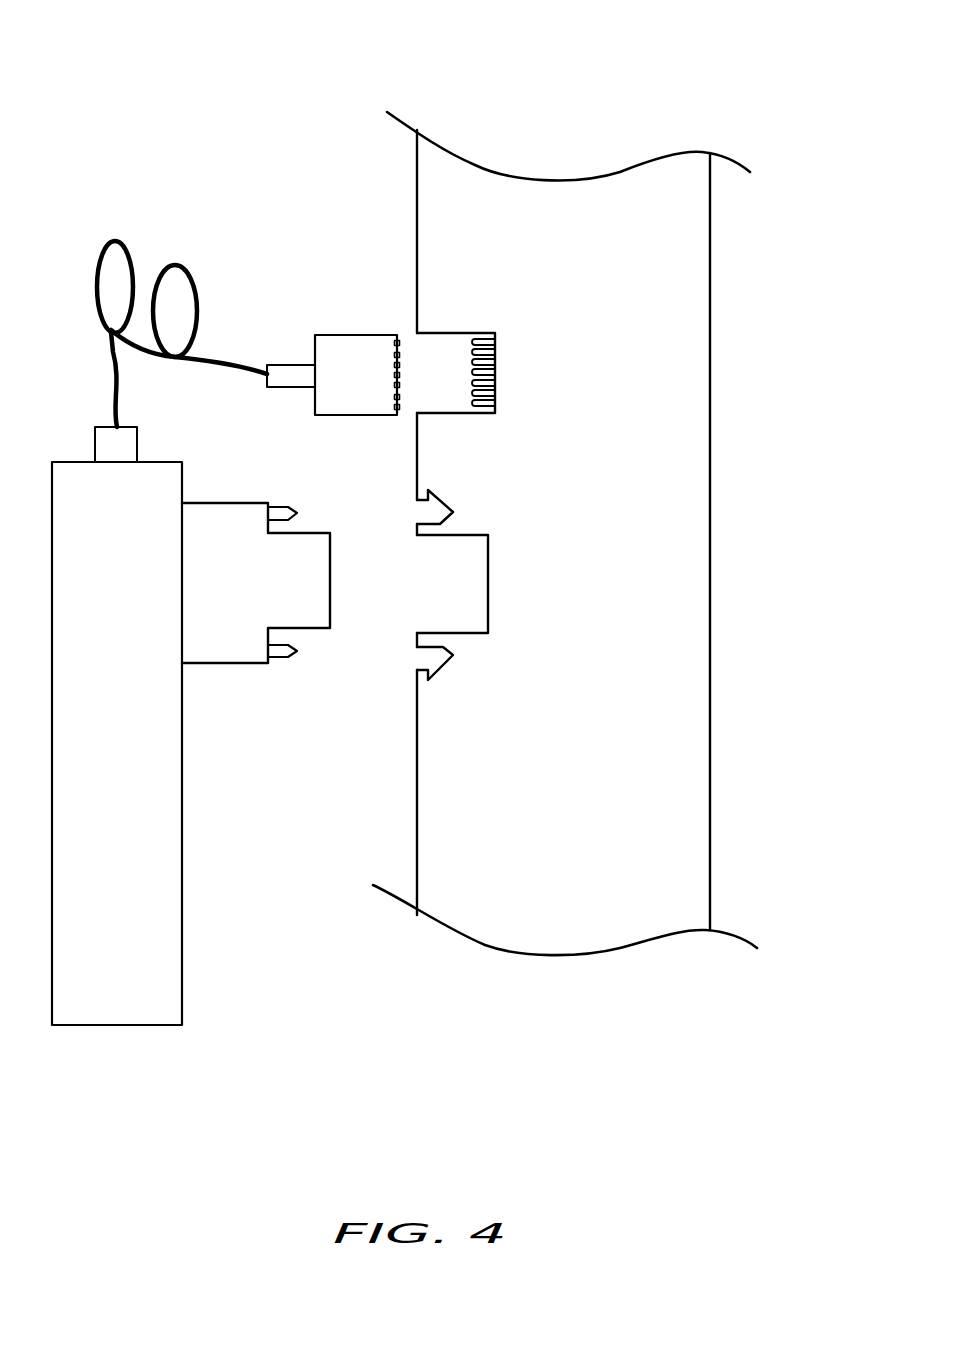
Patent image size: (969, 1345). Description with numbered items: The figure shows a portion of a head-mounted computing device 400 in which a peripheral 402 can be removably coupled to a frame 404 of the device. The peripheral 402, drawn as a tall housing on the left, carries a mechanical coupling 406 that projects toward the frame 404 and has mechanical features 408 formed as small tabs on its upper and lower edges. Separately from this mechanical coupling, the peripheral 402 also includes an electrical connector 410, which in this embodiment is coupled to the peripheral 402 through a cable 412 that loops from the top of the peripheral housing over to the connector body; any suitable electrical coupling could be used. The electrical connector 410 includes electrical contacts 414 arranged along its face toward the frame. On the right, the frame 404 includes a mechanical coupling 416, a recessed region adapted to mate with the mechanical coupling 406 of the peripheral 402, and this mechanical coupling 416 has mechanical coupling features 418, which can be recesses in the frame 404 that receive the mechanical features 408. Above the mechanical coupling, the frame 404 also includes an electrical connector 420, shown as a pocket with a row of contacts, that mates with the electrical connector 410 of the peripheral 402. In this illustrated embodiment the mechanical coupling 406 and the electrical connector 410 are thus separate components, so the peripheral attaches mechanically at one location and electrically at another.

The head-mounted computing device 400 is at (629, 75).
The peripheral 402 is at (137, 720).
The frame 404 is at (580, 583).
The mechanical coupling 406 is at (350, 591).
The mechanical features 408 is at (289, 498).
The electrical connector 410 is at (357, 333).
The cable 412 is at (173, 264).
The electrical contacts 414 is at (398, 397).
The mechanical coupling 416 is at (499, 561).
The mechanical coupling features 418 is at (444, 497).
The electrical connector 420 is at (495, 363).